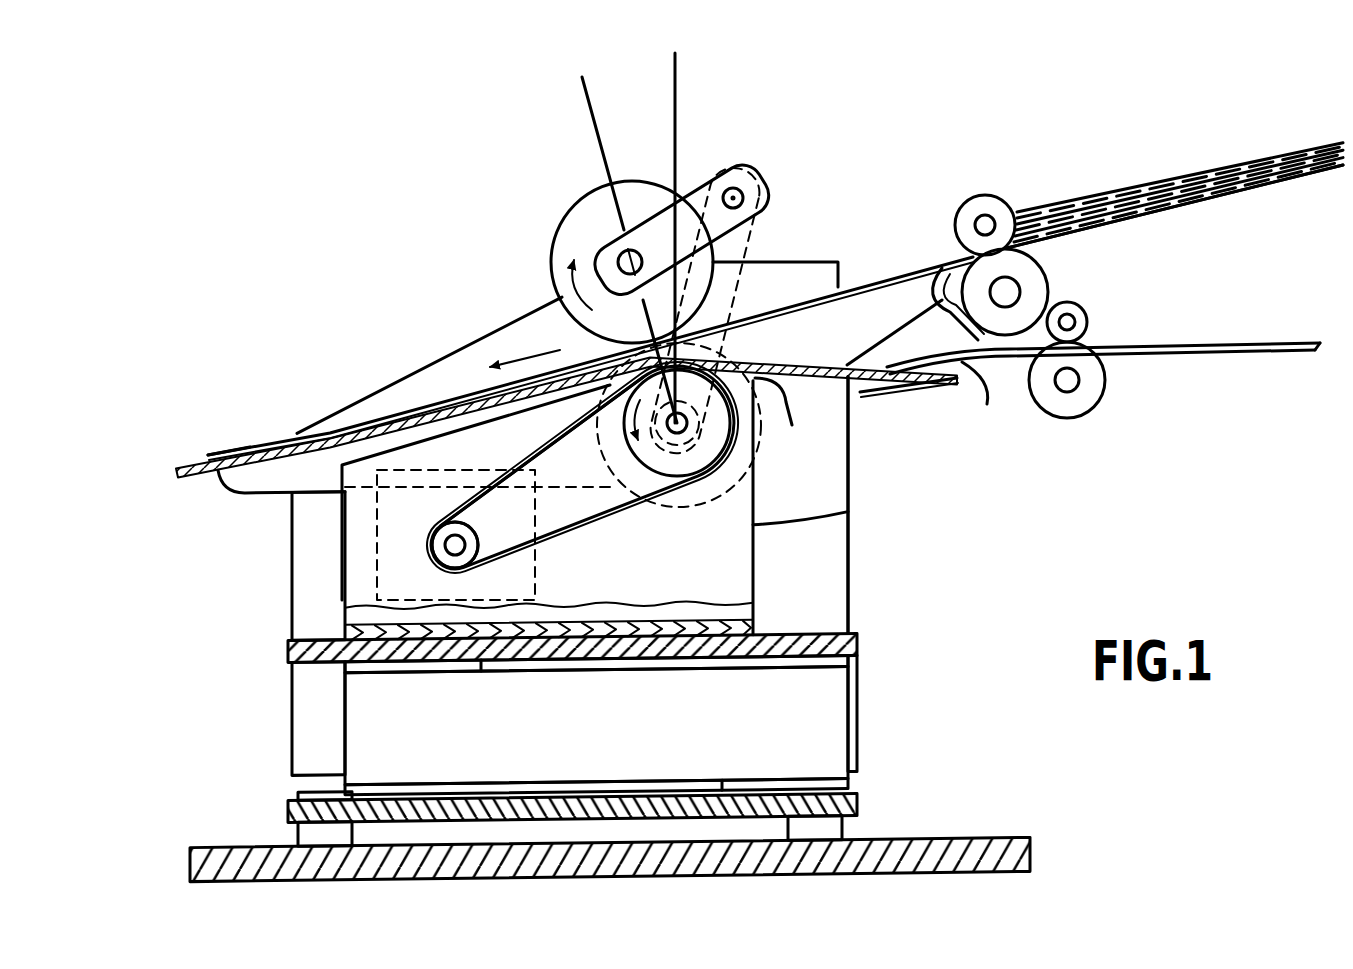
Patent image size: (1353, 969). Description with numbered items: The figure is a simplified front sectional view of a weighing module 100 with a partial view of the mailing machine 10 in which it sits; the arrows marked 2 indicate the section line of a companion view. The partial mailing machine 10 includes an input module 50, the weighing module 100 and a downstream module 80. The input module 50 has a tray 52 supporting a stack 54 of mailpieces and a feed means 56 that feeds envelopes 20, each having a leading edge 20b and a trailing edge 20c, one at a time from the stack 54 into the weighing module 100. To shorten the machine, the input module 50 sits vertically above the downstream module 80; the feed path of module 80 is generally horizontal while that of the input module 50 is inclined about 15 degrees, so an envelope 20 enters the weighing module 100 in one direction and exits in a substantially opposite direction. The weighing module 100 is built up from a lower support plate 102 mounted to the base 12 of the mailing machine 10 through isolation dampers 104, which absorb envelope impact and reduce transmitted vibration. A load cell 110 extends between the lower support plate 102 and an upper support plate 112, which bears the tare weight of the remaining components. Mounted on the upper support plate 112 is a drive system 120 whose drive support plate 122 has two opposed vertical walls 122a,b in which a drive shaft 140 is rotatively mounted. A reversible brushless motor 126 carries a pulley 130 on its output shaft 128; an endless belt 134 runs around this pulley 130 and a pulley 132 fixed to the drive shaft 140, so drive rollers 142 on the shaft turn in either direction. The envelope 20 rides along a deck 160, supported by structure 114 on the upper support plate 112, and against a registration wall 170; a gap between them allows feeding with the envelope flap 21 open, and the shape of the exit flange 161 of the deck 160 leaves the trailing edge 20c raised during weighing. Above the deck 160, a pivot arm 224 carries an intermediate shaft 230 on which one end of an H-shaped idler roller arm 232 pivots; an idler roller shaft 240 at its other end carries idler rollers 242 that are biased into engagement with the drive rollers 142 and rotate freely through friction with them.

The mailing machine 10 is at (489, 97).
The base 12 is at (985, 840).
The angle of inclination 15 is at (670, 86).
The envelope 20 is at (445, 398).
The leading edge 20b is at (204, 454).
The trailing edge 20c is at (943, 262).
The envelope flap 21 is at (883, 338).
The input module 50 is at (1030, 152).
The tray 52 is at (1277, 186).
The stack of mailpieces 54 is at (1222, 152).
The feed means 56 is at (955, 195).
The downstream module 80 is at (1176, 337).
The weighing module 100 is at (378, 248).
The lower support plate 102 is at (860, 800).
The isolation dampers 104 is at (298, 832).
The load cell 110 is at (345, 730).
The upper support plate 112 is at (800, 635).
The support structure 114 is at (848, 470).
The drive system 120 is at (245, 606).
The drive support plate 122 is at (785, 563).
The opposed vertical walls 122a,b is at (758, 530).
The brushless motor 126 is at (377, 545).
The output shaft 128 is at (447, 530).
The pulley 130 is at (500, 552).
The pulley 132 is at (618, 512).
The endless belt 134 is at (596, 545).
The drive shaft 140 is at (690, 430).
The drive rollers 142 is at (757, 420).
The deck 160 is at (190, 466).
The exit flange 161 is at (991, 398).
The registration wall 170 is at (510, 320).
The pivot arm 224 is at (755, 250).
The intermediate shaft 230 is at (768, 190).
The idler roller arm 232 is at (705, 178).
The idler roller shaft 240 is at (548, 268).
The idler rollers 242 is at (572, 208).
The section line 2- 2 is at (862, 87).